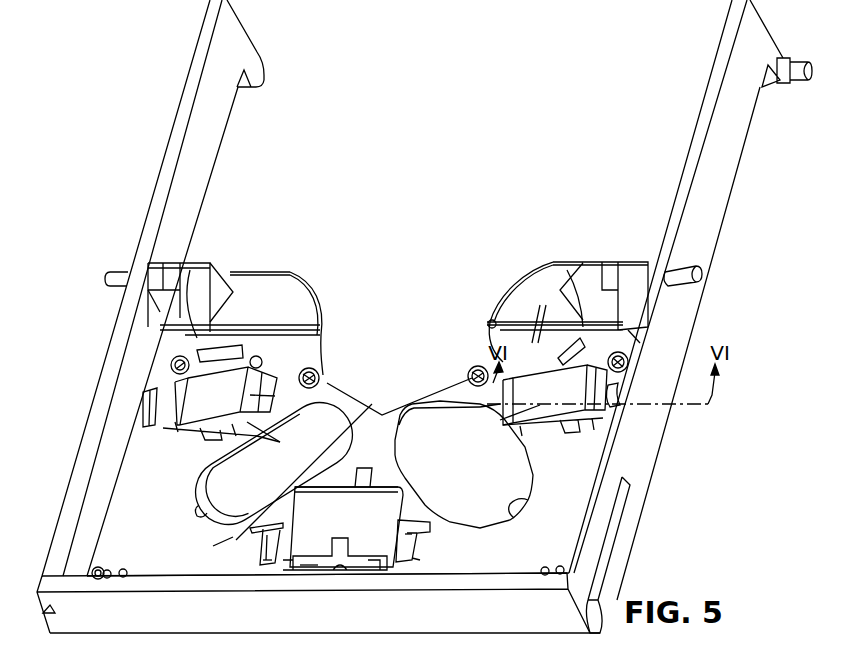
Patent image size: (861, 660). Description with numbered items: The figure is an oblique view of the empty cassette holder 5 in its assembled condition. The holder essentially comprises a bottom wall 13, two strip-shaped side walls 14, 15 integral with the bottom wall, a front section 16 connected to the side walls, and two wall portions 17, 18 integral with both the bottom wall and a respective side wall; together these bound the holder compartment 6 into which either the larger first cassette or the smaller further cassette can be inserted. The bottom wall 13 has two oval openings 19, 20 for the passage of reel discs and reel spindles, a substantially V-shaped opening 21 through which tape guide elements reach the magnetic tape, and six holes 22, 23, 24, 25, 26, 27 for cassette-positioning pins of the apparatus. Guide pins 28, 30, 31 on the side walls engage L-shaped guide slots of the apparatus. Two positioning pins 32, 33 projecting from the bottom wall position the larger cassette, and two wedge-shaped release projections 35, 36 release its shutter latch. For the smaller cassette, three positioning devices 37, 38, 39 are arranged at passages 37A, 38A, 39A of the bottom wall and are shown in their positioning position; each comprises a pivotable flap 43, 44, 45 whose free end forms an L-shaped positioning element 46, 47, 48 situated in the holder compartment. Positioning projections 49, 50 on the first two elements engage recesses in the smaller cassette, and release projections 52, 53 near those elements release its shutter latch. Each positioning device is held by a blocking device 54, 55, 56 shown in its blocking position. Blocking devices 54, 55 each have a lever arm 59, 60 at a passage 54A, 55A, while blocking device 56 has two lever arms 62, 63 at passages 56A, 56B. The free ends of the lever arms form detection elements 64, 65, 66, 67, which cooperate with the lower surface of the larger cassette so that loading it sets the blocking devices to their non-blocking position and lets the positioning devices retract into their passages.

The cassette holder 5 is at (645, 510).
The holder compartment 6 is at (120, 500).
The bottom wall 13 is at (125, 462).
The side wall 14 is at (208, 146).
The side wall 15 is at (728, 146).
The front section 16 is at (138, 626).
The wall portion 17 is at (167, 263).
The wall portion 18 is at (627, 303).
The oval opening 19 is at (195, 510).
The oval opening 20 is at (530, 492).
The V-shaped opening 21 is at (366, 408).
The hole 22 is at (171, 363).
The hole 23 is at (319, 383).
The hole 24 is at (470, 370).
The hole 25 is at (628, 369).
The hole 26 is at (126, 569).
The hole 27 is at (542, 567).
The guide pin 28 is at (114, 270).
The guide pin 30 is at (700, 272).
The guide pin 31 is at (790, 62).
The positioning pin 32 is at (100, 568).
The positioning pin 33 is at (558, 566).
The release projection 35 is at (143, 401).
The release projection 36 is at (610, 407).
The positioning device 37 is at (256, 365).
The passage 37A is at (185, 433).
The positioning device 38 is at (528, 360).
The passage 38A is at (545, 437).
The positioning device 39 is at (402, 491).
The passage 39A is at (337, 572).
The flap 43 is at (233, 440).
The flap 44 is at (520, 424).
The flap 45 is at (316, 490).
The positioning element 46 is at (262, 364).
The positioning element 47 is at (487, 322).
The positioning element 48 is at (359, 468).
The positioning projection 49 is at (256, 428).
The positioning projection 50 is at (497, 406).
The release projection 52 is at (300, 410).
The release projection 53 is at (475, 408).
The blocking device 54 is at (248, 348).
The passage 54A is at (176, 336).
The blocking device 55 is at (585, 300).
The passage 55A is at (640, 344).
The blocking device 56 is at (242, 533).
The passage 56A is at (268, 565).
The passage 56B is at (418, 562).
The lever arm 59 is at (232, 344).
The lever arm 60 is at (558, 336).
The lever arm 62 is at (262, 522).
The lever arm 63 is at (430, 524).
The detection element 64 is at (191, 270).
The detection element 65 is at (588, 345).
The detection element 66 is at (250, 538).
The detection element 67 is at (405, 570).